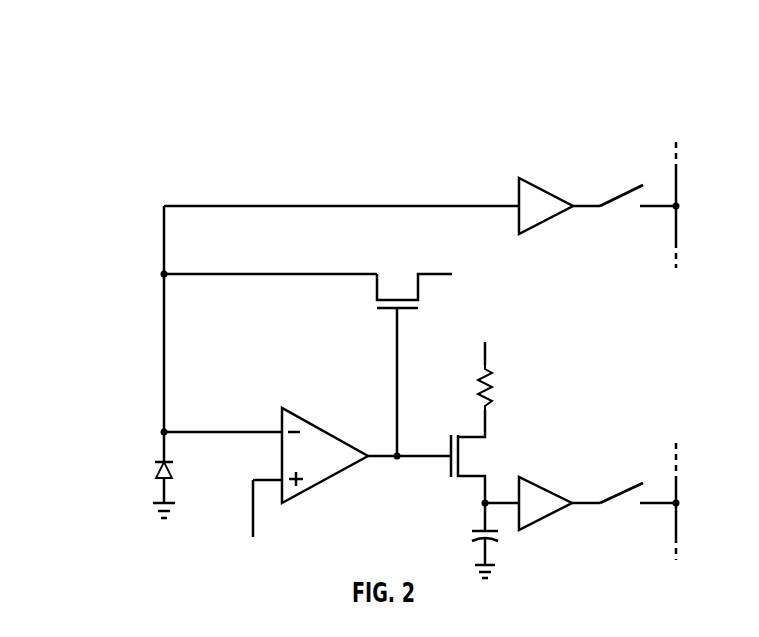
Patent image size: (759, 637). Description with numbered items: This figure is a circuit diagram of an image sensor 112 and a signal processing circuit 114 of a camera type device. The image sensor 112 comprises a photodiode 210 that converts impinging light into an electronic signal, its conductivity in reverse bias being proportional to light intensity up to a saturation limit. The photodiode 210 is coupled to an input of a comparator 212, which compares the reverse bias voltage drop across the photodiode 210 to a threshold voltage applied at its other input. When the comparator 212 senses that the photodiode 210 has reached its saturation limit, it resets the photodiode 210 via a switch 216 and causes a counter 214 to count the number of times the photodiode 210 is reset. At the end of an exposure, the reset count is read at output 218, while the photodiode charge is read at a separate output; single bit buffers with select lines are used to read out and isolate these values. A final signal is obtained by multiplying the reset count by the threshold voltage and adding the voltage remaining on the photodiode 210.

The image sensor 112 is at (126, 517).
The signal processing circuit 114 is at (530, 96).
The photodiode 210 is at (155, 468).
The comparator 212 is at (330, 428).
The counter 214 is at (620, 416).
The switch 216 is at (373, 285).
The output 218 is at (680, 488).